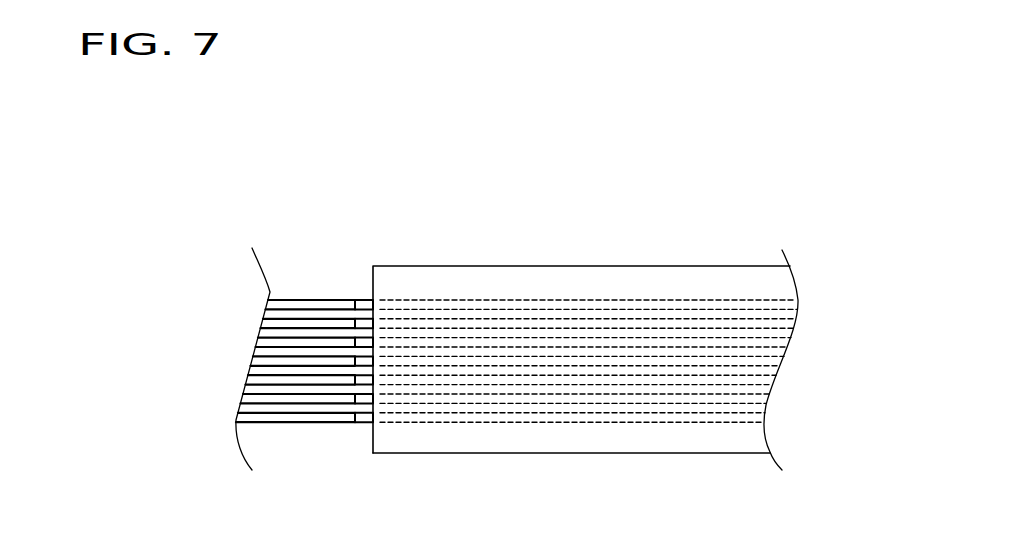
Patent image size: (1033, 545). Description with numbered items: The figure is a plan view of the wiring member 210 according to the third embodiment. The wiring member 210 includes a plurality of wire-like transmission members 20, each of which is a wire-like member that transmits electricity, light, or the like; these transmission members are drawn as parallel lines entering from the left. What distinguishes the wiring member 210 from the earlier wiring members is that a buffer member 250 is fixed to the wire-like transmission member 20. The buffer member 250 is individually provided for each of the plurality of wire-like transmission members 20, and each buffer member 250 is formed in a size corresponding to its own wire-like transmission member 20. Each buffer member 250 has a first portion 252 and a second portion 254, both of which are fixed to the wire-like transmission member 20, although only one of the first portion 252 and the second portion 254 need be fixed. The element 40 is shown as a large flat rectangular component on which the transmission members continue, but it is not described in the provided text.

The wiring member 210 is at (156, 222).
The wire-like transmission member 20 is at (292, 458).
The substrate 40 is at (540, 446).
The buffer member 250 is at (436, 221).
The second portion 254 is at (365, 298).
The first portion 252 is at (395, 298).